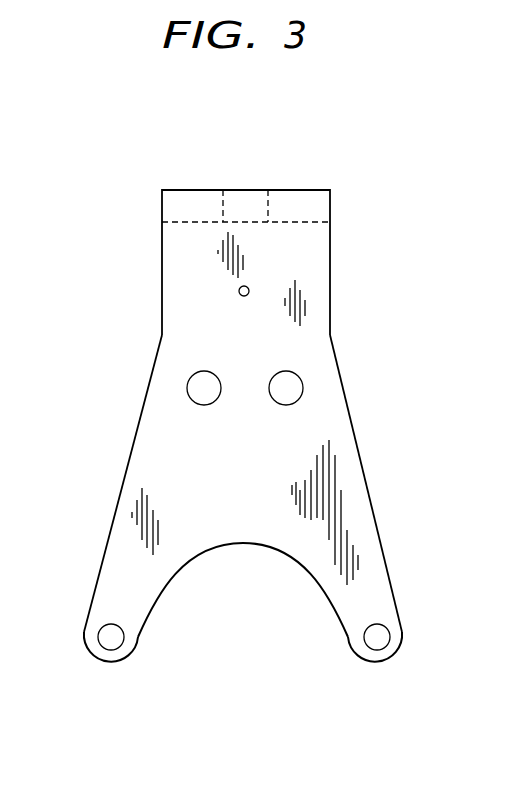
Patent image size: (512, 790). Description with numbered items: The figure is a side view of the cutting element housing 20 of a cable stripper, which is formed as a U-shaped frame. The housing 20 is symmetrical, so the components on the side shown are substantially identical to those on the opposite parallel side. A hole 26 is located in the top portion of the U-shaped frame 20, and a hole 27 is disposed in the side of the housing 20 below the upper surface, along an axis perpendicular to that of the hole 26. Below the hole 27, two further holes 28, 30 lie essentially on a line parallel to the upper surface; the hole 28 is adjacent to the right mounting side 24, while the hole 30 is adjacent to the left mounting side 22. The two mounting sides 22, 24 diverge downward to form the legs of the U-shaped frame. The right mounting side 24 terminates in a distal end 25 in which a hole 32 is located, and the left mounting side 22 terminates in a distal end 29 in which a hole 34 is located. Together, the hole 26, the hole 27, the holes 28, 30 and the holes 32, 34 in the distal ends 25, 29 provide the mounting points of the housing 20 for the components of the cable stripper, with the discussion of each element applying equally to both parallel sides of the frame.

The cutting element housing 20 is at (112, 221).
The left mounting side 22 is at (365, 475).
The right mounting side 24 is at (127, 468).
The distal end 25 is at (110, 586).
The hole 26 is at (243, 190).
The hole 27 is at (239, 291).
The hole 28 is at (187, 382).
The distal end 29 is at (394, 590).
The hole 30 is at (303, 383).
The hole 32 is at (110, 644).
The hole 34 is at (378, 644).